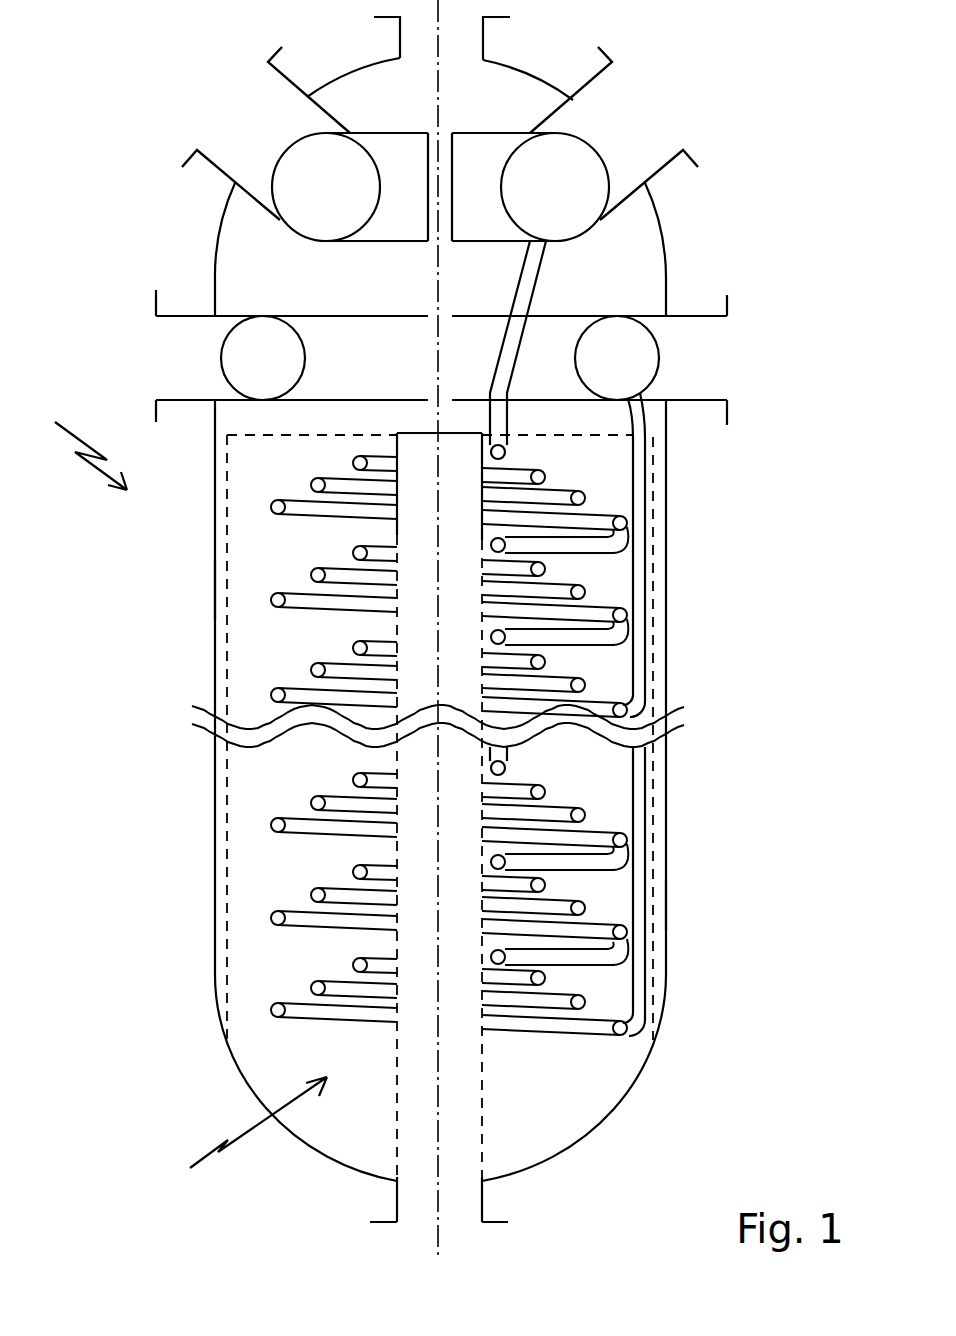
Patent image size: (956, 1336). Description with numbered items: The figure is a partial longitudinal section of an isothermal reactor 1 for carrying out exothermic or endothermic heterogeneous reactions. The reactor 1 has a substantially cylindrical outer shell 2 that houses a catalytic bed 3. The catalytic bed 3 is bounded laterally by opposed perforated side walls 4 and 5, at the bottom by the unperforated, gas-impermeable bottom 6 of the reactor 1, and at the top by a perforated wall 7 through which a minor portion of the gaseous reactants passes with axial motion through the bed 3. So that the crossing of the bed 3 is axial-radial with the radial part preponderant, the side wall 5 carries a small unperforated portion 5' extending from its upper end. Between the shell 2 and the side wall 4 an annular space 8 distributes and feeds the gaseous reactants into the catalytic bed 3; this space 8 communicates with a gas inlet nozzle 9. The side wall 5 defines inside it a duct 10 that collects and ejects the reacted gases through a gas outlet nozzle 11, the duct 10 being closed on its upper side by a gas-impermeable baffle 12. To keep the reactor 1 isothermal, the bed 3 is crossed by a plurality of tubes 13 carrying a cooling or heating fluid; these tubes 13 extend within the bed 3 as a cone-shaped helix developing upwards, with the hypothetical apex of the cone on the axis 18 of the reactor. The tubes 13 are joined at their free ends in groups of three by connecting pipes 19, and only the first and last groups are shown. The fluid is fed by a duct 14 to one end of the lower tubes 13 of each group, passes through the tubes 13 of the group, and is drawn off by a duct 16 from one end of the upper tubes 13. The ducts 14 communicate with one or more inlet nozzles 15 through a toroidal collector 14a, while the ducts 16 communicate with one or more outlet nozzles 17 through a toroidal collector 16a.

The isothermal reactor 1 is at (81, 444).
The outer shell 2 is at (667, 462).
The catalytic bed 3 is at (239, 1138).
The perforated side wall 4 is at (654, 675).
The perforated side wall 5 is at (449, 819).
The unperforated portion 5' is at (449, 493).
The bottom 6 is at (583, 1138).
The perforated wall 7 is at (272, 437).
The annular space 8 is at (218, 588).
The gas inlet nozzle 9 is at (483, 40).
The duct 10 is at (422, 953).
The gas outlet nozzle 11 is at (482, 1200).
The baffle 12 is at (430, 433).
The tubes 13 is at (275, 690).
The duct 14 is at (640, 425).
The toroidal collector 14a is at (357, 352).
The inlet nozzle 15 is at (186, 312).
The duct 16 is at (527, 285).
The toroidal collector 16a is at (478, 168).
The outlet nozzle 17 is at (215, 170).
The axis 18 is at (437, 1237).
The connecting pipes 19 is at (628, 545).